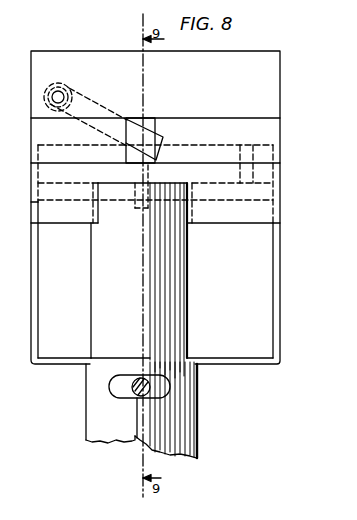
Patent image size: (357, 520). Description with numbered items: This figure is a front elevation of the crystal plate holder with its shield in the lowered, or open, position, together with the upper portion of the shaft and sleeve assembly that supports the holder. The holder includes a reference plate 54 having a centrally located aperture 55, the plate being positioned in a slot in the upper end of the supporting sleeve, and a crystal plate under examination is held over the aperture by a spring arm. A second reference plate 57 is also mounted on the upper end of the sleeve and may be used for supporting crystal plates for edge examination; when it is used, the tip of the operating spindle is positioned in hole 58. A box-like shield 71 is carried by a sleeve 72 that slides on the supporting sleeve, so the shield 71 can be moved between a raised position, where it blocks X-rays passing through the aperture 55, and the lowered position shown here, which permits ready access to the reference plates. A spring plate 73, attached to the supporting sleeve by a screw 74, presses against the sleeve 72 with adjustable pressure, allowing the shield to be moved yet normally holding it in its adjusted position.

The reference plate 54 is at (281, 88).
The aperture 55 is at (173, 101).
The reference plate 57 is at (195, 148).
The hole 58 is at (248, 172).
The box-like shield 71 is at (281, 325).
The sleeve 72 is at (193, 410).
The spring plate 73 is at (122, 396).
The screw 74 is at (150, 385).